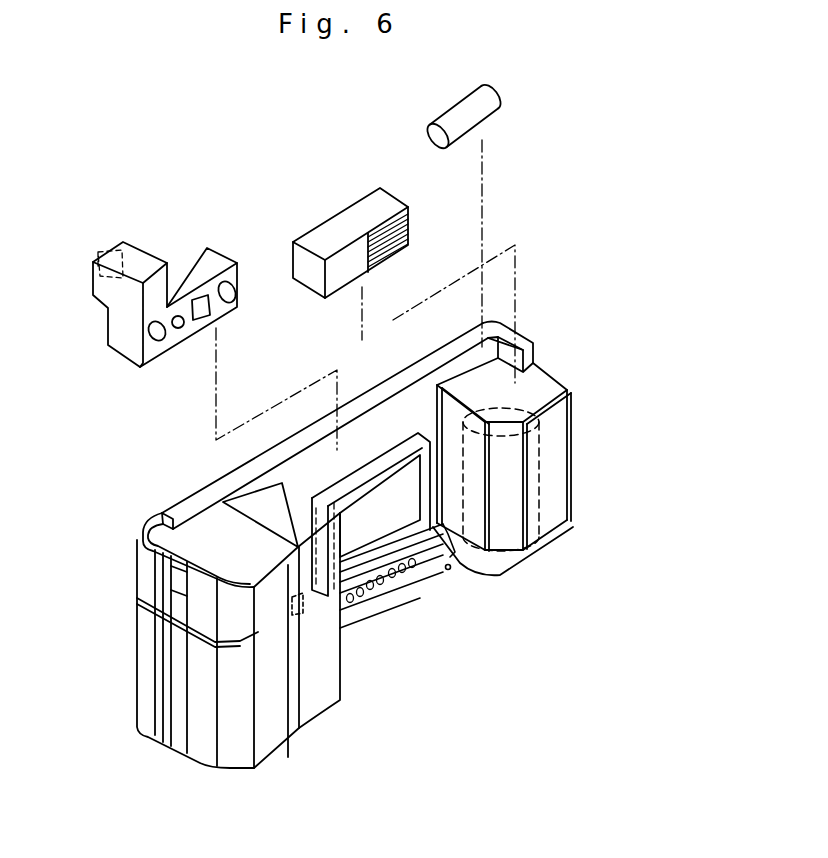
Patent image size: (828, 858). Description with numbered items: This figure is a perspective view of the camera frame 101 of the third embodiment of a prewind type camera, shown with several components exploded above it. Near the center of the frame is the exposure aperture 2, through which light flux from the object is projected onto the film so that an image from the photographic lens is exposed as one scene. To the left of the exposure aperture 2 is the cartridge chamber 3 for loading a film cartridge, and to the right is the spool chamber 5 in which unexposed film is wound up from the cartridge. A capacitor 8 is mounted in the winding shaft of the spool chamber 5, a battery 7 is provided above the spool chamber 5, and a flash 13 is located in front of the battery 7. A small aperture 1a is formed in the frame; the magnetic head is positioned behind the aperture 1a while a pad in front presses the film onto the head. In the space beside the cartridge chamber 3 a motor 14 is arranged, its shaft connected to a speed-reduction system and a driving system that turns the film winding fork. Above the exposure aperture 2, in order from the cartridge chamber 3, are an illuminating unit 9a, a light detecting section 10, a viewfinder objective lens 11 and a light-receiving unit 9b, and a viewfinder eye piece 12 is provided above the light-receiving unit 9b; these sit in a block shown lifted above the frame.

The aperture 1a is at (307, 603).
The exposure aperture 2 is at (421, 497).
The cartridge chamber 3 is at (230, 760).
The spool chamber 5 is at (551, 471).
The battery 7 is at (457, 115).
The capacitor 8 is at (501, 479).
The illuminating unit 9a is at (151, 338).
The light-receiving unit 9b is at (233, 294).
The light detecting section 10 is at (178, 329).
The viewfinder objective lens 11 is at (196, 322).
The viewfinder eye piece 12 is at (97, 250).
The flash 13 is at (350, 223).
The motor 14 is at (318, 706).
The camera frame 101 is at (533, 323).